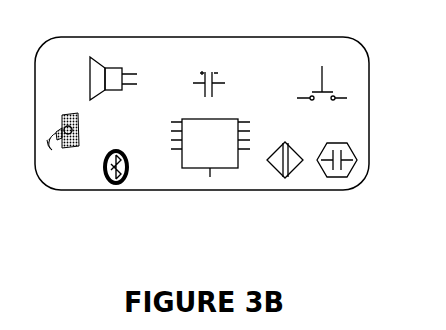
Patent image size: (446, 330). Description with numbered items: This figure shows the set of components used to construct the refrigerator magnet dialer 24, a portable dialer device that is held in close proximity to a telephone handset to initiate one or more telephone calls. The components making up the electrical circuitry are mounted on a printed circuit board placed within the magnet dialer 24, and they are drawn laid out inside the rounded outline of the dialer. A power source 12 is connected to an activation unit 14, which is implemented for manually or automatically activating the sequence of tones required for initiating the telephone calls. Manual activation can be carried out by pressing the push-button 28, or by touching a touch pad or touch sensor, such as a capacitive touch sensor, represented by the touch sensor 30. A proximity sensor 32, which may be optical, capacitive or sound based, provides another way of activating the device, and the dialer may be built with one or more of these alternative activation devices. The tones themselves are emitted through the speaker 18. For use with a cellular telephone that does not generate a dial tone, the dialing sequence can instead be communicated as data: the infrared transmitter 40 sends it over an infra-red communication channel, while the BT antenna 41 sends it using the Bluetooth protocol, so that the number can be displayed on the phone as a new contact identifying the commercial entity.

The refrigerator magnet dialer 24 is at (297, 37).
The speaker 18 is at (113, 73).
The power source 12 is at (209, 71).
The push-button 28 is at (322, 73).
The infrared transmitter 40 is at (63, 123).
The BT antenna 41 is at (116, 155).
The activation unit 14 is at (210, 146).
The proximity sensor 32 is at (285, 149).
The touch sensor 30 is at (337, 149).